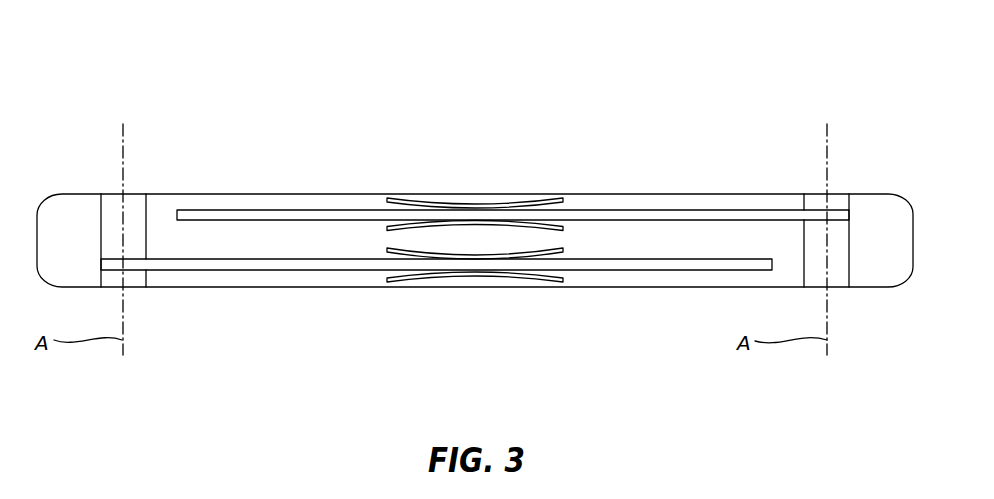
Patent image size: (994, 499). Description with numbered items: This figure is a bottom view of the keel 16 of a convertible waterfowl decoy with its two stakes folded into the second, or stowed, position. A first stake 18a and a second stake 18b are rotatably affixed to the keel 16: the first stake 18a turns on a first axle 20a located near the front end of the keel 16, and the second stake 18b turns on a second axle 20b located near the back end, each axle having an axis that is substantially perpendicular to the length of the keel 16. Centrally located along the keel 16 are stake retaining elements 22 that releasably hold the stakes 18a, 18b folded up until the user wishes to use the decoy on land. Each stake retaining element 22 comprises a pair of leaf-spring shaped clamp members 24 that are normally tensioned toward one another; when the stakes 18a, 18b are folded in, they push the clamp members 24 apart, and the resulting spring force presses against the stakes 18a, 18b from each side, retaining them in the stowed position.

The keel 16 is at (313, 62).
The first stake 18a is at (708, 209).
The second stake 18b is at (223, 271).
The first axle 20a is at (838, 203).
The second axle 20b is at (135, 277).
The stake retaining element 22 is at (487, 188).
The clamp member 24 is at (415, 203).